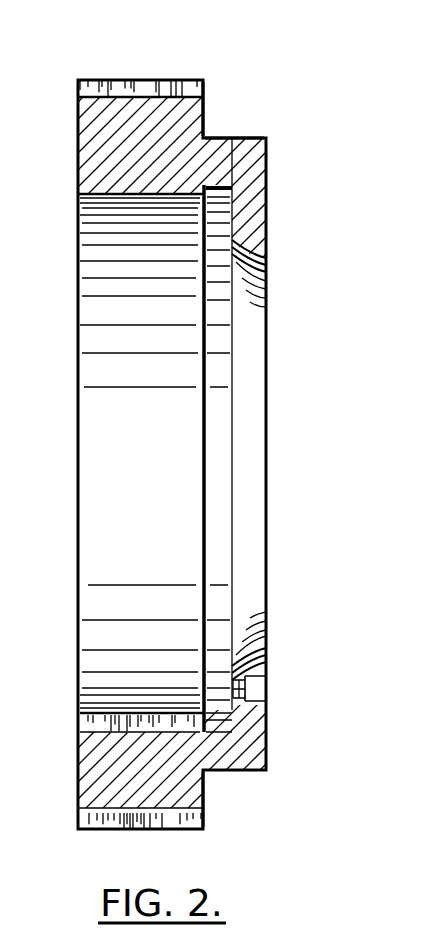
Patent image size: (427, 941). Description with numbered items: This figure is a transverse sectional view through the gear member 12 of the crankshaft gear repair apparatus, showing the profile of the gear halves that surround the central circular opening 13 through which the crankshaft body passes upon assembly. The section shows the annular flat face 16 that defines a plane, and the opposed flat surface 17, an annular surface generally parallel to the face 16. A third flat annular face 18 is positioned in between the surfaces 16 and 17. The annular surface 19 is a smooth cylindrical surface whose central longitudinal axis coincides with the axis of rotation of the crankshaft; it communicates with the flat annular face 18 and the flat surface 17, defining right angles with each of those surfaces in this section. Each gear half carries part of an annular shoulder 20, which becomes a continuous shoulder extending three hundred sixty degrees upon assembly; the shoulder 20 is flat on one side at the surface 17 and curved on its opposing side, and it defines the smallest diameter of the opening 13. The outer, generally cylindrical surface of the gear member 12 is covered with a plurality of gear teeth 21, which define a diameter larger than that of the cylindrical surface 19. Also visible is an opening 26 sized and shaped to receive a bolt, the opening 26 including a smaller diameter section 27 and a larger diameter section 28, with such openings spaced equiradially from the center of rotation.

The gear member 12 is at (268, 152).
The central circular opening 13 is at (127, 456).
The annular flat face 16 is at (78, 132).
The opposed flat surface 17 is at (267, 190).
The third flat annular face 18 is at (205, 98).
The annular surface 19 is at (236, 137).
The annular shoulder 20 is at (267, 236).
The gear teeth 21 is at (142, 78).
The opening 26 is at (275, 685).
The smaller diameter section 27 is at (262, 690).
The larger diameter section 28 is at (262, 703).